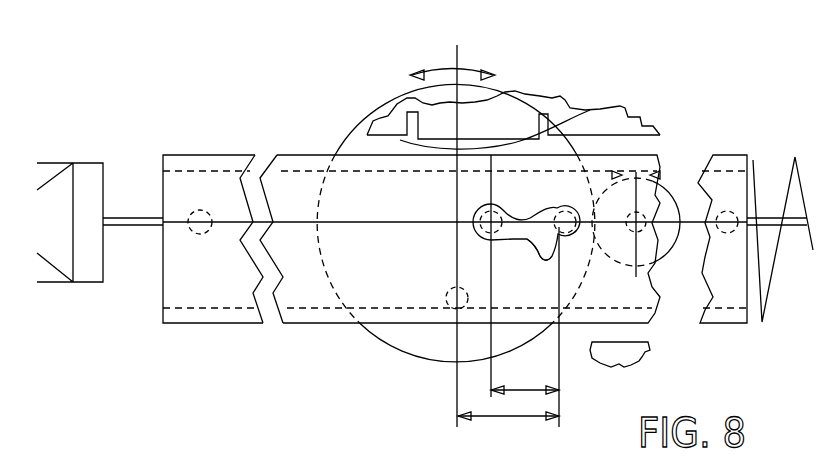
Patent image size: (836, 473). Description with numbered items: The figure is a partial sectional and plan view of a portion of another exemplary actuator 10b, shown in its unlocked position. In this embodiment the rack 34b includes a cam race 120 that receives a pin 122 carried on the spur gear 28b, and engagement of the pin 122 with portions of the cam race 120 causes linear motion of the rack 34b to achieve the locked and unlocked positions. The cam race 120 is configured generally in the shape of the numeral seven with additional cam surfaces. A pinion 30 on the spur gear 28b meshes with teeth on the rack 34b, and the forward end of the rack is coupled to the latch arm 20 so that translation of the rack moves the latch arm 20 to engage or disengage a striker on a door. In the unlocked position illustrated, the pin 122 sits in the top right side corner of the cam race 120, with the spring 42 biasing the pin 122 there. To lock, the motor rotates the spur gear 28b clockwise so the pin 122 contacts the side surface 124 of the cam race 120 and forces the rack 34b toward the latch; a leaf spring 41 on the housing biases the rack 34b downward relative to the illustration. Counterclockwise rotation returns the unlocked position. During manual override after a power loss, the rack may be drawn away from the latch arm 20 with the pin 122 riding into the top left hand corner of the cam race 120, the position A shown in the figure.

The actuator 10b is at (675, 98).
The latch arm 20 is at (90, 163).
The pinion 30 is at (118, 216).
The rack 34b is at (310, 324).
The spur gear 28b is at (400, 346).
The leaf spring 41 is at (468, 149).
The position A is at (468, 300).
The pin 122 is at (567, 210).
The side surface 124 is at (546, 247).
The cam race 120 is at (556, 284).
The spring 42 is at (772, 287).